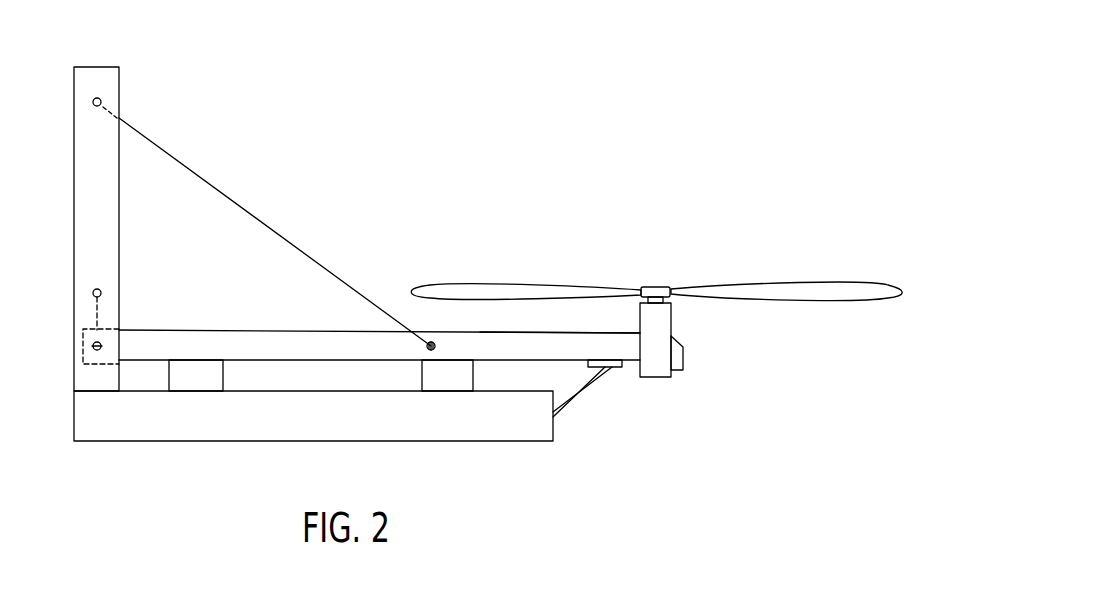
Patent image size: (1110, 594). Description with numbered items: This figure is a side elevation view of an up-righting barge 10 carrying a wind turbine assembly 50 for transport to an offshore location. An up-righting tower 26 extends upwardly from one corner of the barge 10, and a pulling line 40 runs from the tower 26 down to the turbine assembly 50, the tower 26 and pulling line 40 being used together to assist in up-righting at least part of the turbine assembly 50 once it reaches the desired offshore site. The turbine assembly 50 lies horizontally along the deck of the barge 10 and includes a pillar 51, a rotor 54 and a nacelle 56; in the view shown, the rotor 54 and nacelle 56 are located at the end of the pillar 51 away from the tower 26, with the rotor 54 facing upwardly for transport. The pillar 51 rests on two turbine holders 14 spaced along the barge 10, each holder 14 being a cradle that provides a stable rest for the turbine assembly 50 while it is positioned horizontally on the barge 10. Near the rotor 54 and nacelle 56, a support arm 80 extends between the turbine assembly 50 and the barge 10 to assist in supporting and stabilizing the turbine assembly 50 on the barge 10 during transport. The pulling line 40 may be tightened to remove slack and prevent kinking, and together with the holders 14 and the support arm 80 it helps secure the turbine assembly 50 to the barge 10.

The up-righting barge 10 is at (313, 434).
The turbine holder 14 is at (338, 418).
The second up-righting tower 26 is at (139, 229).
The pulling line 40 is at (259, 231).
The wind turbine assembly 50 is at (379, 327).
The pillar 51 is at (560, 318).
The rotor 54 is at (525, 284).
The nacelle 56 is at (685, 332).
The support arm 80 is at (589, 389).